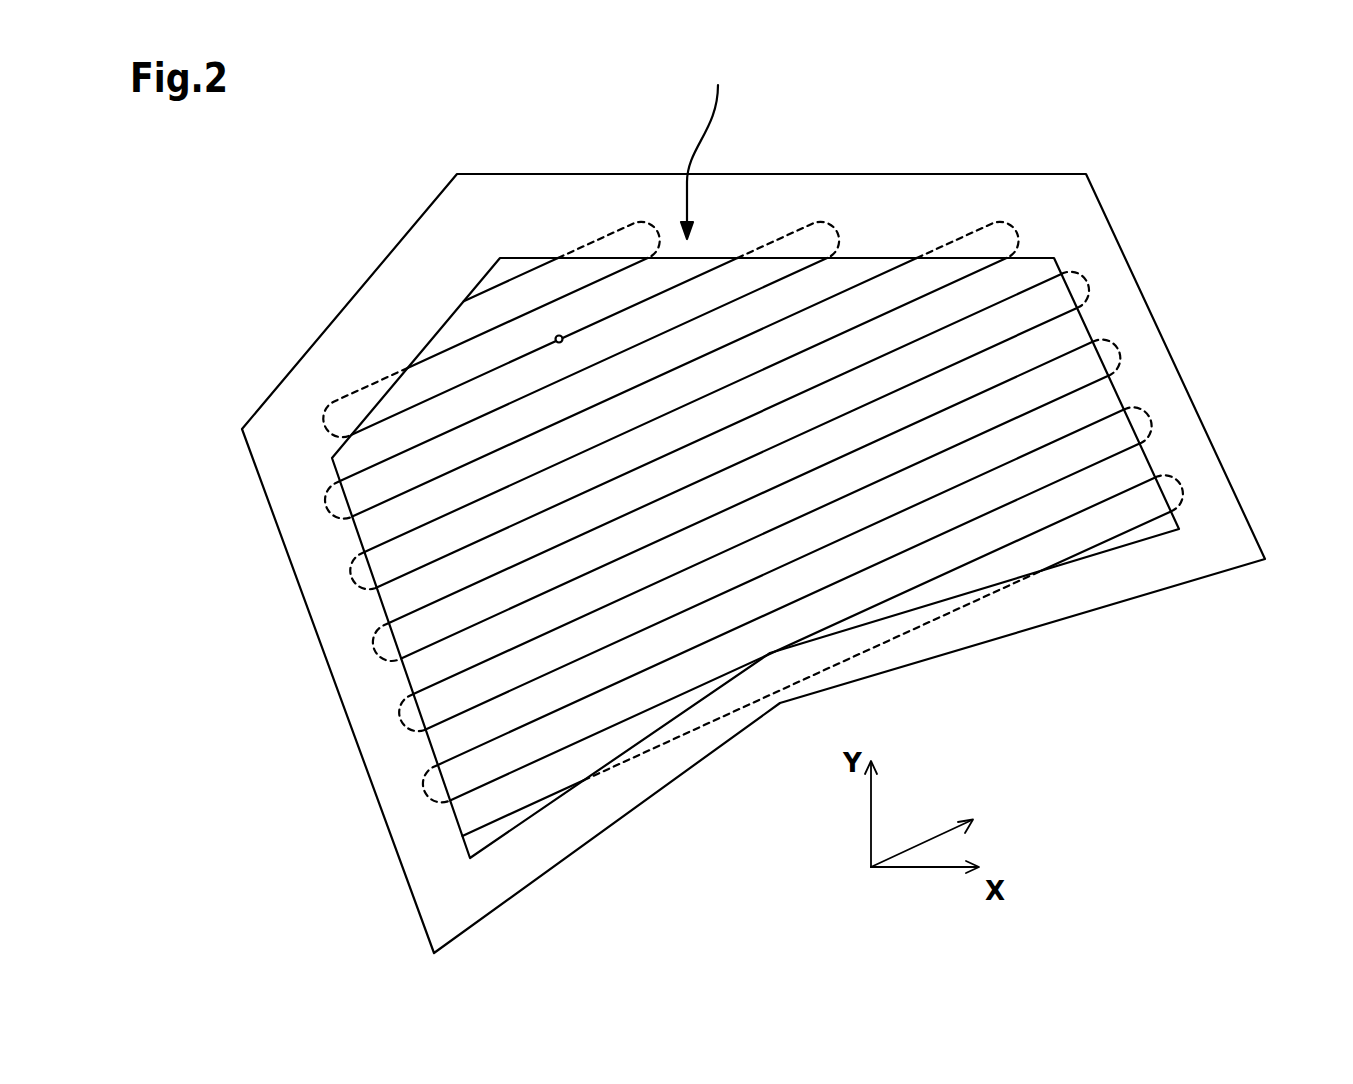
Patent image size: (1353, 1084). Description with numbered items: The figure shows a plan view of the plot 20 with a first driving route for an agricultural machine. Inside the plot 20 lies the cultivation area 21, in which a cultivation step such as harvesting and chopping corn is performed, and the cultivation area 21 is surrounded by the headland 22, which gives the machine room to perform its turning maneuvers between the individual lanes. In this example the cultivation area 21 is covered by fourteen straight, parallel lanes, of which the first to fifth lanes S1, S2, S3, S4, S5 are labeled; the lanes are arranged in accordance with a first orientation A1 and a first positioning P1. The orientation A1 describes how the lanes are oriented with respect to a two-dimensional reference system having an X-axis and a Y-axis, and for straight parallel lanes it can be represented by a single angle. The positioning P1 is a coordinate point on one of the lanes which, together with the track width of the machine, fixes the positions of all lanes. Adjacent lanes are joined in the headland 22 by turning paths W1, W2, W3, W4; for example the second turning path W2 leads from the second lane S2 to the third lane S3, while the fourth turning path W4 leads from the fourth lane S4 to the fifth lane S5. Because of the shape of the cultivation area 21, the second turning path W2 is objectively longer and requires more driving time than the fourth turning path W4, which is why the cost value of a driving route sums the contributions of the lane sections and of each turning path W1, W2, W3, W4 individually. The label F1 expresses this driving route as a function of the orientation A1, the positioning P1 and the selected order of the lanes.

The plot 20 is at (1108, 216).
The cultivation area 21 is at (848, 257).
The headland 22 is at (1049, 230).
The first lane S1 is at (513, 273).
The second lane S2 is at (480, 332).
The third lane S3 is at (458, 383).
The fourth lane S4 is at (393, 455).
The fifth lane S5 is at (377, 502).
The first turning path W1 is at (577, 247).
The second turning path W2 is at (380, 372).
The third turning path W3 is at (762, 242).
The fourth turning path W4 is at (333, 487).
The first positioning P1 is at (559, 343).
The fiber path function F1(A1,P1,R1) F1 is at (731, 143).
The first orientation A1 is at (926, 826).